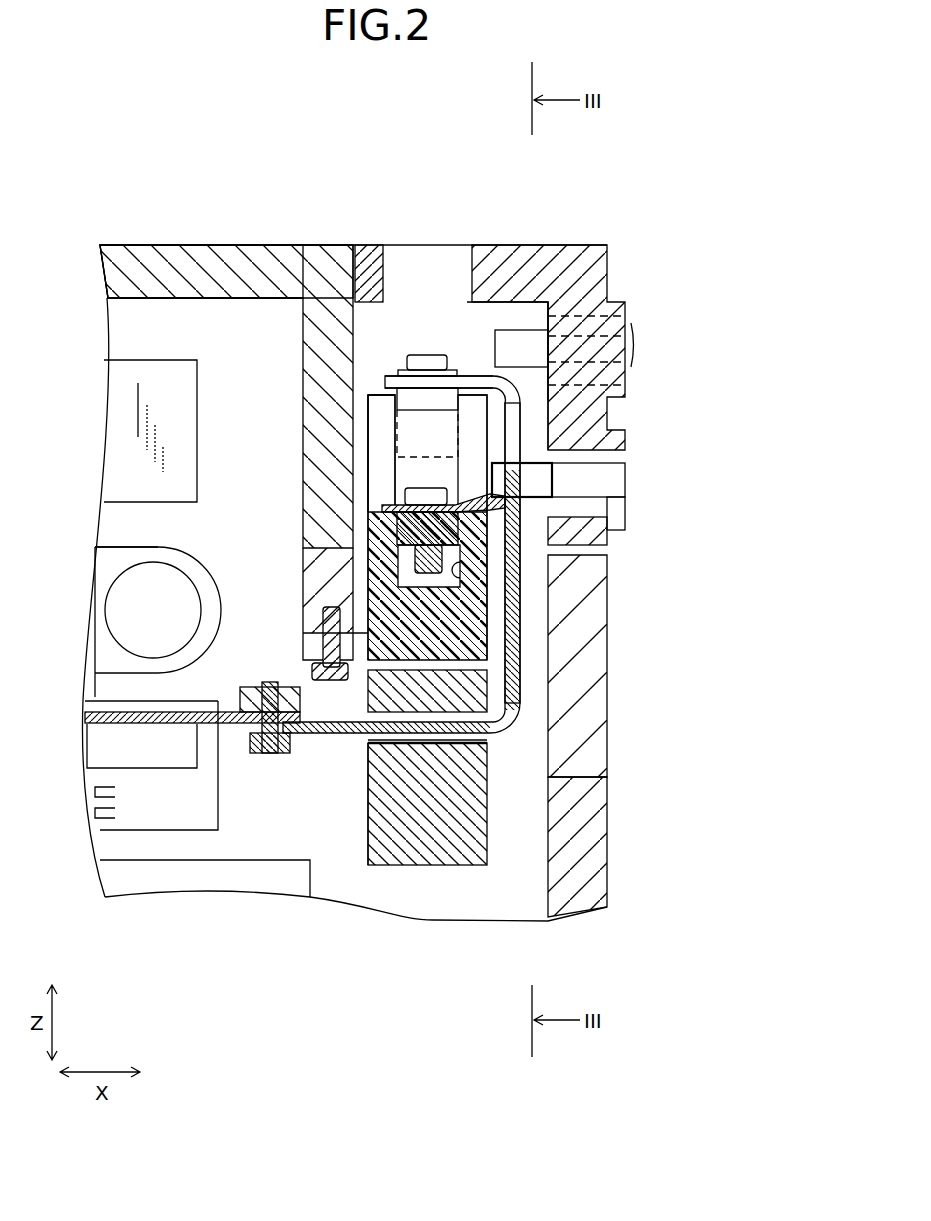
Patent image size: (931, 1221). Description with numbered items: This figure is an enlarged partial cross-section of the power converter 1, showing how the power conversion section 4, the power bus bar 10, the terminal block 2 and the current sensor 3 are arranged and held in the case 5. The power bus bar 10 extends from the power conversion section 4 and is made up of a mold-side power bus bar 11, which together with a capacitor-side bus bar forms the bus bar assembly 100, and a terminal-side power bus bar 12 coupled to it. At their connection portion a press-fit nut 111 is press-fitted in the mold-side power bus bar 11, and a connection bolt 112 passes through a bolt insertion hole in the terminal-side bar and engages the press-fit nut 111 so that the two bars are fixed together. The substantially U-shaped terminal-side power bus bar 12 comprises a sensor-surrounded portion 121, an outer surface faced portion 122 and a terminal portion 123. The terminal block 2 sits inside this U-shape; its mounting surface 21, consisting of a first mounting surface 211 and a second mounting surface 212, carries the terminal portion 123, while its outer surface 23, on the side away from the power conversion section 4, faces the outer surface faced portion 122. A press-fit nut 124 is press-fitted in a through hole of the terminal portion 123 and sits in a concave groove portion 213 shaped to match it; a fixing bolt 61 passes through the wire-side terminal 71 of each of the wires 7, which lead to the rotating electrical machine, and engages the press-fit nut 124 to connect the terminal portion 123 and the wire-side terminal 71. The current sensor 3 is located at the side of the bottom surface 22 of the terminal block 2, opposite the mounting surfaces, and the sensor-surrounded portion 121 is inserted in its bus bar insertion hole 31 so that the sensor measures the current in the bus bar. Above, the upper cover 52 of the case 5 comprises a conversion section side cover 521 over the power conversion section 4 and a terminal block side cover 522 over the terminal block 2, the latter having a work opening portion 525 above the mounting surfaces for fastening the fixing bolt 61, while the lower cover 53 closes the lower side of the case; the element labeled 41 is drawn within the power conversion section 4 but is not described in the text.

The power converter 1 is at (643, 189).
The terminal block 2 is at (483, 387).
The current sensor 3 is at (430, 880).
The power conversion section 4 is at (195, 321).
The case 5 is at (143, 236).
The wires 7 is at (560, 300).
The power bus bar 10 is at (395, 623).
The mold-side power bus bar 11 is at (200, 723).
The terminal-side power bus bar 12 is at (345, 933).
The mounting surface 21 is at (374, 313).
The bottom surface 22 is at (487, 697).
The outer surface 23 is at (492, 550).
The bus bar insertion hole 31 is at (490, 742).
The capacitor element 41 is at (213, 542).
The upper cover 52 is at (393, 216).
The lower cover 53 is at (585, 845).
The fixing bolt 61 is at (450, 376).
The wire-side terminal 71 is at (458, 392).
The bus bar assembly 100 is at (133, 848).
The press-fit nut 111 is at (257, 698).
The connection bolt 112 is at (273, 747).
The sensor-surrounded portion 121 is at (417, 743).
The outer surface faced portion 122 is at (520, 700).
The terminal portion 123 is at (428, 362).
The press-fit nut 124 is at (368, 440).
The first mounting surface 211 is at (372, 510).
The second mounting surface 212 is at (372, 397).
The concave groove portion 213 is at (500, 602).
The conversion section side cover 521 is at (120, 280).
The terminal block side cover 522 is at (607, 268).
The work opening portion 525 is at (378, 244).